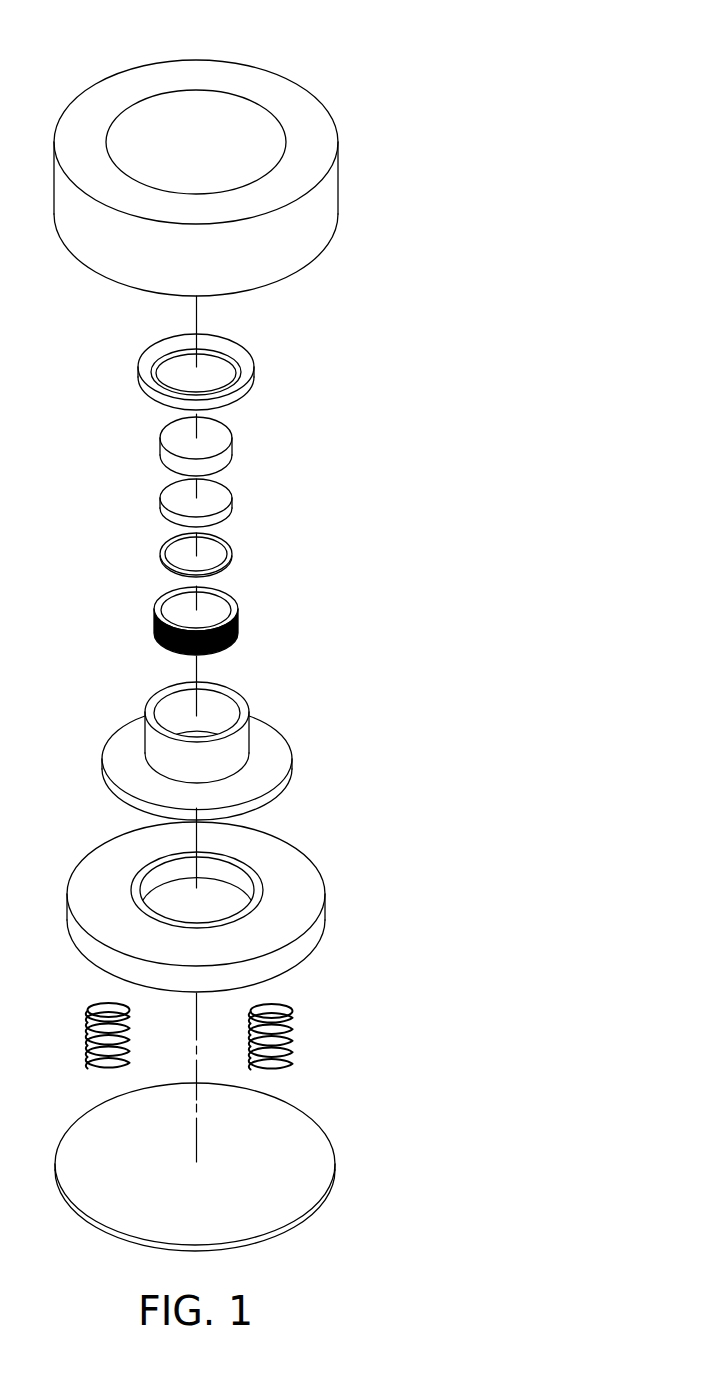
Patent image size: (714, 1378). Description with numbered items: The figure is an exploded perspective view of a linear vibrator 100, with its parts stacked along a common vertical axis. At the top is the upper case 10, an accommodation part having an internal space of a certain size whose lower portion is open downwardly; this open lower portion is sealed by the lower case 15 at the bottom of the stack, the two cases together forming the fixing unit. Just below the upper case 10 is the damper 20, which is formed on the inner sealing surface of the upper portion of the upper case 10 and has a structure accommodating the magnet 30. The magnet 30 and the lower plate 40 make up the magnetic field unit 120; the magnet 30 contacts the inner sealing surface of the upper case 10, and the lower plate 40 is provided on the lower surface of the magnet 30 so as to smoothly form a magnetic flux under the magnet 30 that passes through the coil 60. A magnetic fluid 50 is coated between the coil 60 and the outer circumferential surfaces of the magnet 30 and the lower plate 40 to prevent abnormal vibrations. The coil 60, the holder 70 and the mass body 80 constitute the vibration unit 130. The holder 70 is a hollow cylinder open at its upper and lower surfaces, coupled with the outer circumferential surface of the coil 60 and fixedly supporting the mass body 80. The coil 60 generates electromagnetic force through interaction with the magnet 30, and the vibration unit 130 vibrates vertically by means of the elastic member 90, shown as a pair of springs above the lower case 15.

The linear vibrator 100 is at (72, 20).
The upper case 10 is at (328, 197).
The lower case 15 is at (302, 1133).
The damper 20 is at (248, 353).
The magnet 30 is at (223, 437).
The lower plate 40 is at (259, 500).
The magnetic fluid 50 is at (229, 557).
The coil 60 is at (240, 620).
The holder 70 is at (268, 711).
The mass body 80 is at (245, 907).
The elastic member 90 is at (292, 1020).
The magnetic field unit 120 is at (304, 449).
The vibration unit 130 is at (288, 789).